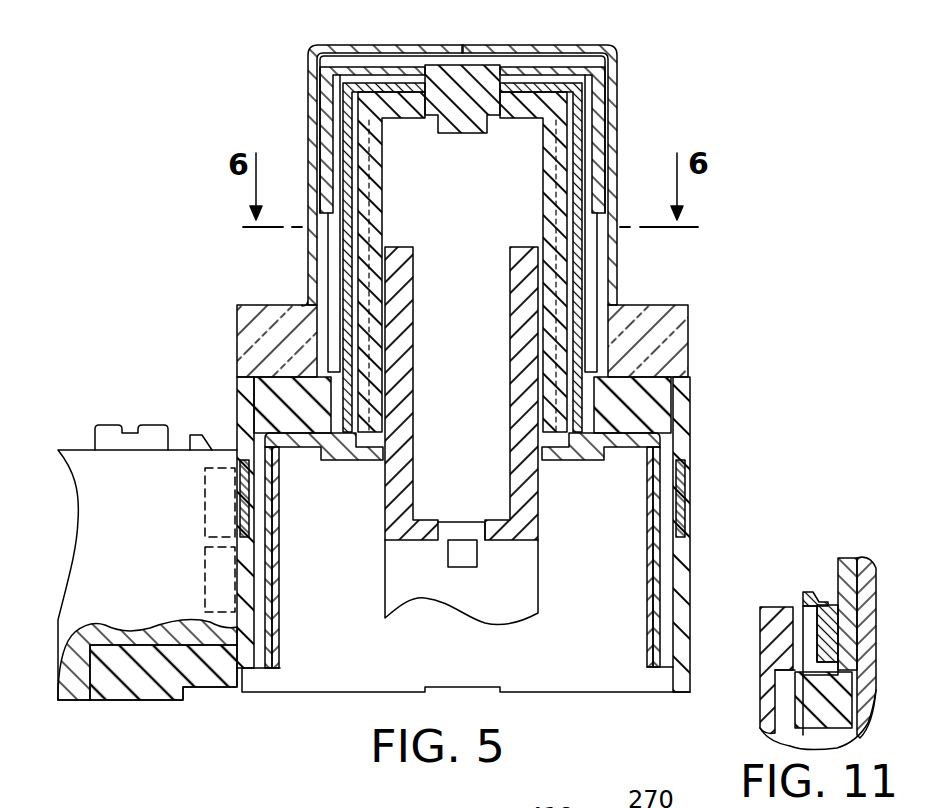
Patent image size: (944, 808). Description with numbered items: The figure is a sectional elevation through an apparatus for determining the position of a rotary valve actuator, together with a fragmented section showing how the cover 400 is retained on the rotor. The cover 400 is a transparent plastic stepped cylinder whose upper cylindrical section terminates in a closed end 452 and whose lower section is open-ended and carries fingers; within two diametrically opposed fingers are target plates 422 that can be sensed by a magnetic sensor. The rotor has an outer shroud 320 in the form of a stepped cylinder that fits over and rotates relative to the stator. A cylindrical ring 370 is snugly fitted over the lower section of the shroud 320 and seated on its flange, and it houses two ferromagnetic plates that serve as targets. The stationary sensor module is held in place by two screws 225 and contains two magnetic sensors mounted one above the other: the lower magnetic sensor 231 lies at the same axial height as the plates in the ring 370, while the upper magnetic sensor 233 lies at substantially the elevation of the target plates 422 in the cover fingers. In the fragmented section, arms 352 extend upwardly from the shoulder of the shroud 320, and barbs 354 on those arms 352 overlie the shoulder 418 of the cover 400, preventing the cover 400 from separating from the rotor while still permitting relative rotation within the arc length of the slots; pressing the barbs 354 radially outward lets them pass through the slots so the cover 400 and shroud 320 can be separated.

In FIG. 5, the closed end 452 is at (520, 45).
In FIG. 5, the shoulder 418 is at (278, 306).
In FIG. 5, the screws 225 is at (102, 448).
In FIG. 5, the target plates 422 is at (240, 470).
In FIG. 5, the upper magnetic sensor 233 is at (205, 500).
In FIG. 5, the lower magnetic sensor 231 is at (205, 570).
In FIG. 5, the cylindrical ring 370 is at (686, 584).
In FIG. 11, the cover 400 is at (762, 634).
In FIG. 11, the arms 352 is at (808, 628).
In FIG. 11, the barbs 354 is at (822, 600).
In FIG. 11, the outer shroud 320 is at (828, 712).